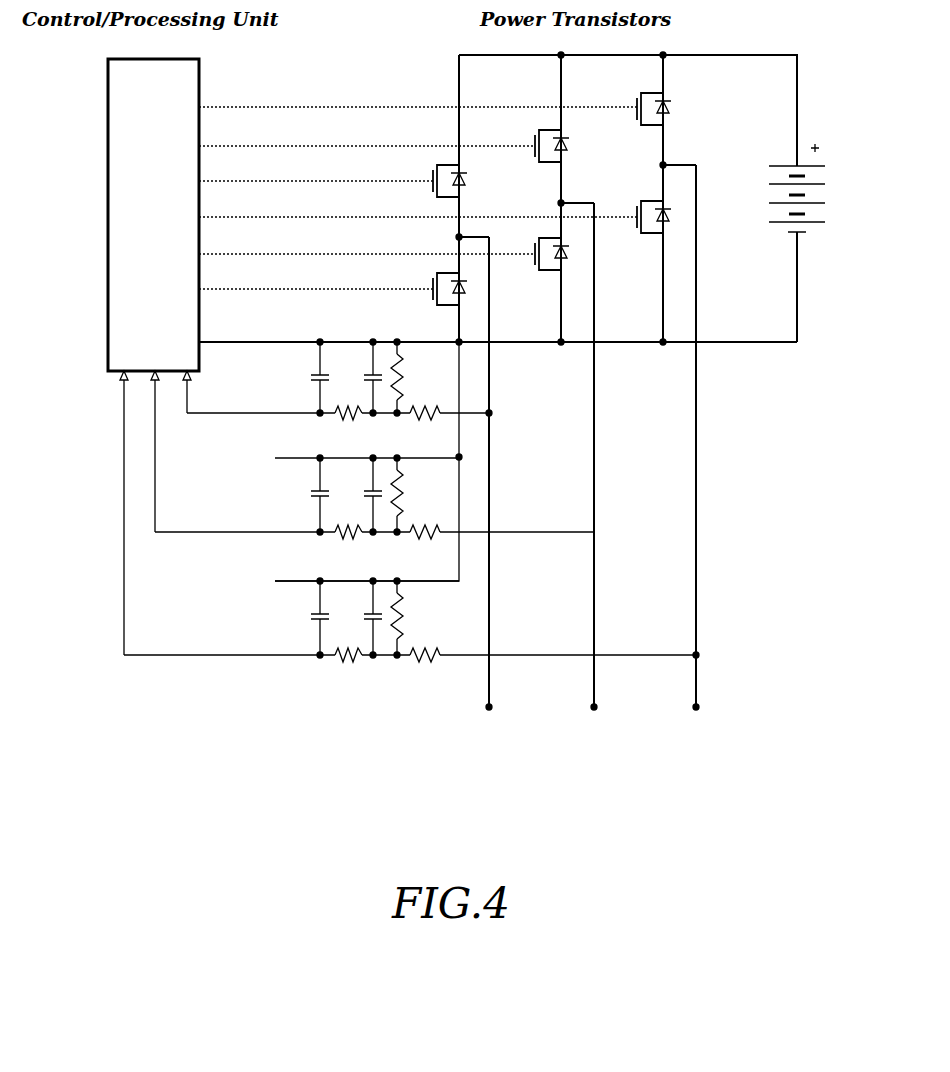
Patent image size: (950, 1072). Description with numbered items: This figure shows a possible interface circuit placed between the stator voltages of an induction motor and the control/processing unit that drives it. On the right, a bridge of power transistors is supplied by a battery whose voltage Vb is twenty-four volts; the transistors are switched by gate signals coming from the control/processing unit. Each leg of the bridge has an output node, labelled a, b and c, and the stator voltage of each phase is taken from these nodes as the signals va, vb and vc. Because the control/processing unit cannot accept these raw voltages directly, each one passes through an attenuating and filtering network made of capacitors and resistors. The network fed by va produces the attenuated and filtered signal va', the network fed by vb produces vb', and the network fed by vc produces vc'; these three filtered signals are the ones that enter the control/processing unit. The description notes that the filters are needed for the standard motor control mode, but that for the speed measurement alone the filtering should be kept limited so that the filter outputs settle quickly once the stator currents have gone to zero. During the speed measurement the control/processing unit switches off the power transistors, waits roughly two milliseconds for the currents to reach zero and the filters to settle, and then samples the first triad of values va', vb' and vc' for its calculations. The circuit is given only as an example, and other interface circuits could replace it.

The phase a node a is at (666, 165).
The phase b node b is at (561, 193).
The phase c node c is at (459, 239).
The stator voltage va is at (670, 448).
The stator voltage vb is at (566, 467).
The stator voltage vc is at (461, 484).
The filtered stator voltage va' is at (410, 627).
The filtered stator voltage vb' is at (374, 504).
The filtered stator voltage vc' is at (338, 386).
The battery voltage Vb is at (823, 193).